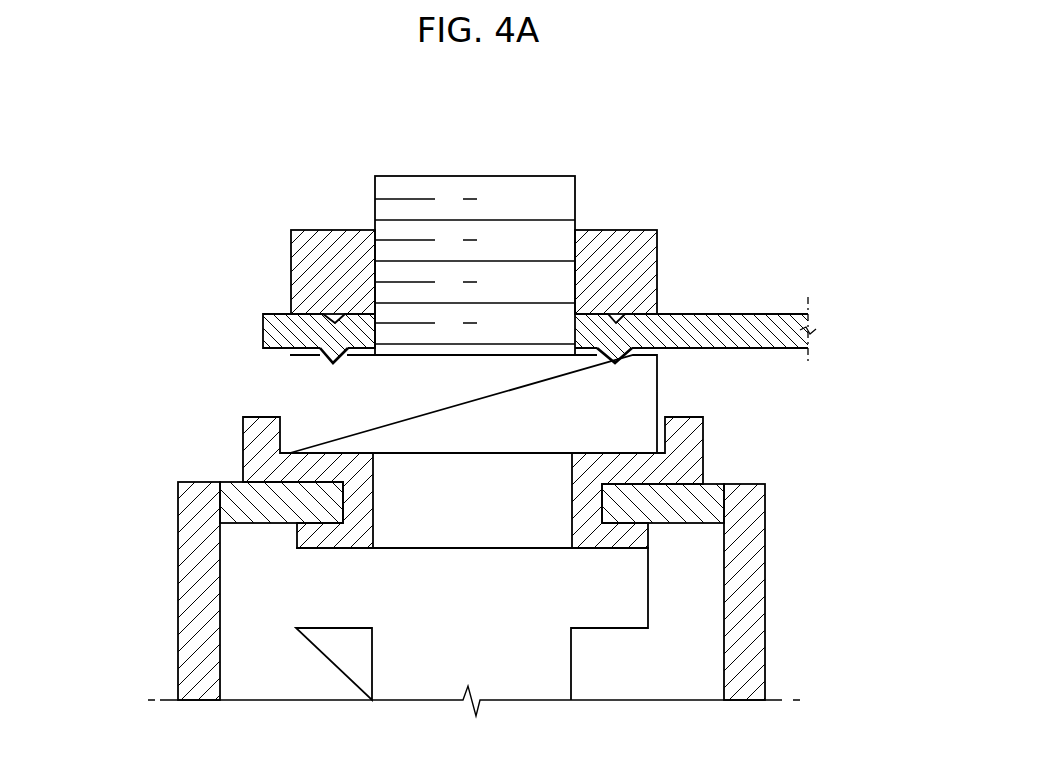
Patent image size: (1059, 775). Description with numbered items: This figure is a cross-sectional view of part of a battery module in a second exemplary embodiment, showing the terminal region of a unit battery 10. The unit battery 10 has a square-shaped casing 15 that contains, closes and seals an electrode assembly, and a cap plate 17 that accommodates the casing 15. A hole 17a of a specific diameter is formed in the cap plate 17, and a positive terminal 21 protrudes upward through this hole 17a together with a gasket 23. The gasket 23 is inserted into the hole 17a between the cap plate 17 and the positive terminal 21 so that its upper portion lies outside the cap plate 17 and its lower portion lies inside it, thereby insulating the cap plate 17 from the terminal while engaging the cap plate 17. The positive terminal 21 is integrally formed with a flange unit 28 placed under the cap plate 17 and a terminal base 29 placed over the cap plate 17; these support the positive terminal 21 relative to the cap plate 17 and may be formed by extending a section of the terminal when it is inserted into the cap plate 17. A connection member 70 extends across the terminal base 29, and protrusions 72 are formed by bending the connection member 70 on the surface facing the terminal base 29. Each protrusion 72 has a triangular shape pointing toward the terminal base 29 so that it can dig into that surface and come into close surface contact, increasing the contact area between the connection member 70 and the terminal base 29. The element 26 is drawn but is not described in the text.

The unit battery 10 is at (770, 575).
The casing 15 is at (190, 575).
The cap plate 17 is at (236, 484).
The hole 17a is at (345, 513).
The positive terminal 21 is at (515, 176).
The gasket 23 is at (690, 458).
The upper ring 26 is at (652, 272).
The flange unit 28 is at (648, 607).
The terminal base 29 is at (648, 382).
The connection member 70 is at (757, 331).
The protrusion 72 is at (322, 353).